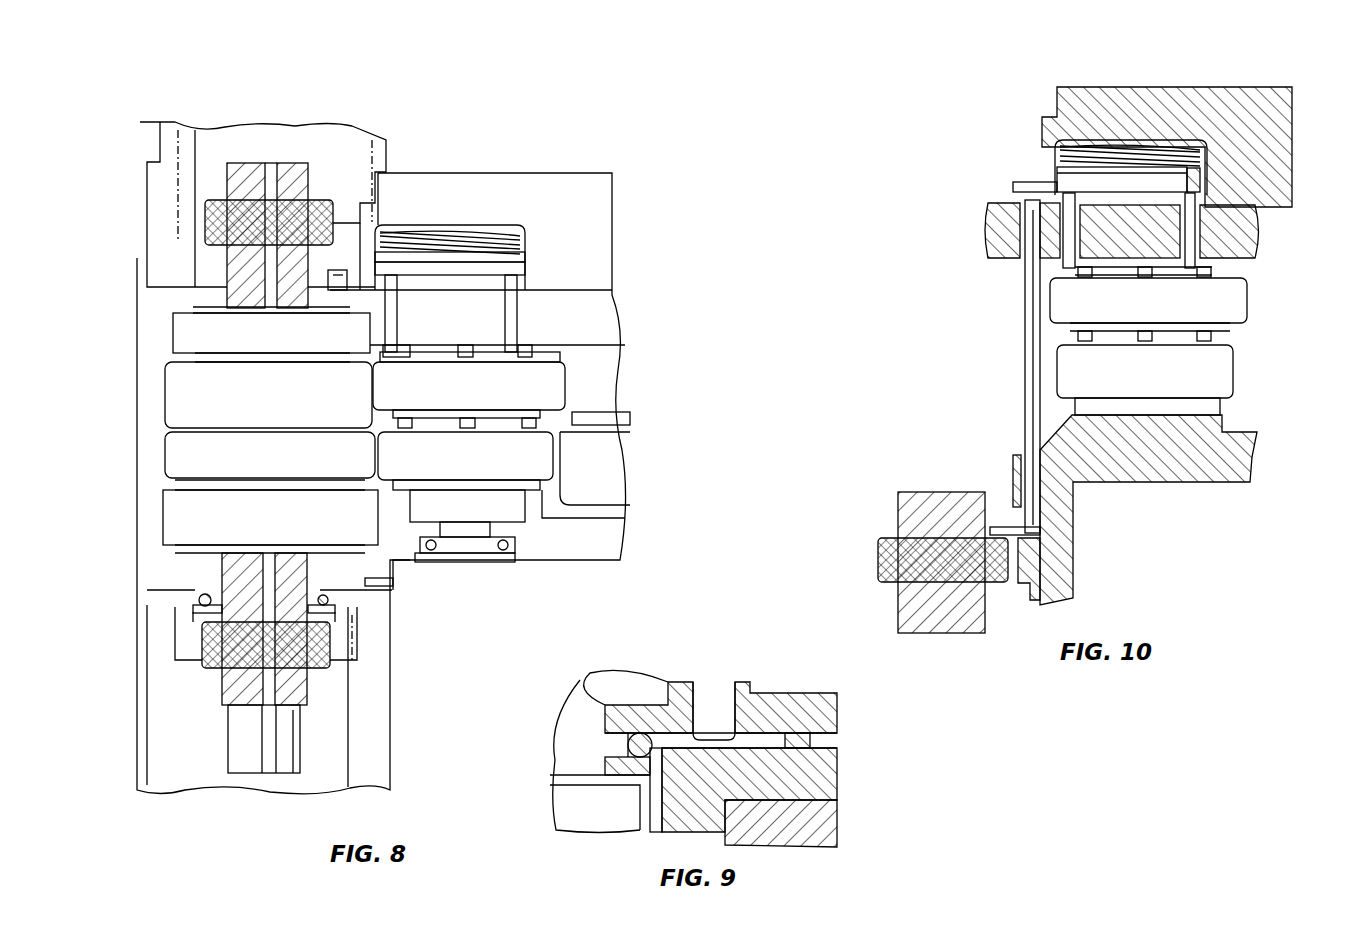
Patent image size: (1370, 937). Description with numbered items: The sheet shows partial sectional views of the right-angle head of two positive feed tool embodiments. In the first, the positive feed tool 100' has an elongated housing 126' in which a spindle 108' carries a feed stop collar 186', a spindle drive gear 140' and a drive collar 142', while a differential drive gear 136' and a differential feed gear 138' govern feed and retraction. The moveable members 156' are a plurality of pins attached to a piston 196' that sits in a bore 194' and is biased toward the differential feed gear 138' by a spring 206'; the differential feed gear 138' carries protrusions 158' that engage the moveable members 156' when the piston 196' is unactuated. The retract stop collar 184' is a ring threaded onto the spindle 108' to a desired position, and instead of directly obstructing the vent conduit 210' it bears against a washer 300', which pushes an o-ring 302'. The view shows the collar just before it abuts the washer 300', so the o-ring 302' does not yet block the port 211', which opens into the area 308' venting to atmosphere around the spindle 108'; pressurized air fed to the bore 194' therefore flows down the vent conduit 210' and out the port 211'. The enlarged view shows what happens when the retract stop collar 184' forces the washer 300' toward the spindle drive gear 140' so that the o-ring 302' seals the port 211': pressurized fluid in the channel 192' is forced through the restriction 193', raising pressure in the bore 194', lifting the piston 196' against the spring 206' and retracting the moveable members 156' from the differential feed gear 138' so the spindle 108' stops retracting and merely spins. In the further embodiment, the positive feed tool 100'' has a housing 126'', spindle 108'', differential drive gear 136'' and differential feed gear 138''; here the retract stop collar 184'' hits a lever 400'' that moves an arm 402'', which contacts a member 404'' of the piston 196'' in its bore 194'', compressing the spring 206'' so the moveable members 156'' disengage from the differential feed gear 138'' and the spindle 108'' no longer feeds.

In FIG. 8, the positive feed tool 100' is at (461, 93).
In FIG. 8, the spindle 108' is at (262, 193).
In FIG. 8, the feed stop collar 186' is at (205, 206).
In FIG. 8, the channel 192' is at (383, 350).
In FIG. 9, the channel 192' is at (749, 746).
In FIG. 8, the housing 126' is at (504, 360).
In FIG. 8, the spring 206' is at (466, 200).
In FIG. 8, the piston 196' is at (530, 239).
In FIG. 8, the bore 194' is at (547, 253).
In FIG. 8, the moveable members 156' is at (536, 306).
In FIG. 8, the protrusions 158' is at (536, 337).
In FIG. 8, the differential feed gear 138' is at (532, 392).
In FIG. 8, the differential drive gear 136' is at (532, 493).
In FIG. 8, the drive collar 142' is at (223, 383).
In FIG. 8, the spindle drive gear 140' is at (225, 440).
In FIG. 8, the area 308' is at (148, 595).
In FIG. 8, the o-ring 302' is at (201, 613).
In FIG. 9, the o-ring 302' is at (571, 744).
In FIG. 8, the washer 300' is at (205, 639).
In FIG. 8, the retract stop collar 184' is at (202, 629).
In FIG. 8, the restriction 193' is at (413, 578).
In FIG. 9, the restriction 193' is at (838, 725).
In FIG. 9, the port 211' is at (659, 693).
In FIG. 9, the vent conduit 210' is at (704, 693).
In FIG. 10, the positive feed tool 100'' is at (927, 257).
In FIG. 10, the housing 126'' is at (1167, 131).
In FIG. 10, the spring 206'' is at (1138, 123).
In FIG. 10, the piston 196'' is at (1209, 163).
In FIG. 10, the bore 194'' is at (1273, 182).
In FIG. 10, the member 404'' is at (1023, 139).
In FIG. 10, the moveable members 156'' is at (1187, 230).
In FIG. 10, the differential feed gear 138'' is at (1186, 309).
In FIG. 10, the differential drive gear 136'' is at (1188, 380).
In FIG. 10, the arm 402'' is at (990, 366).
In FIG. 10, the lever 400'' is at (1007, 473).
In FIG. 10, the spindle 108'' is at (937, 517).
In FIG. 10, the retract stop collar 184'' is at (906, 560).